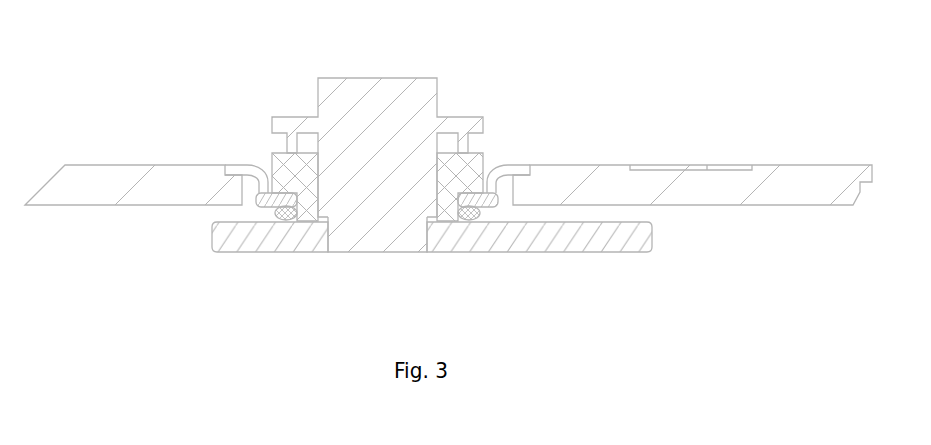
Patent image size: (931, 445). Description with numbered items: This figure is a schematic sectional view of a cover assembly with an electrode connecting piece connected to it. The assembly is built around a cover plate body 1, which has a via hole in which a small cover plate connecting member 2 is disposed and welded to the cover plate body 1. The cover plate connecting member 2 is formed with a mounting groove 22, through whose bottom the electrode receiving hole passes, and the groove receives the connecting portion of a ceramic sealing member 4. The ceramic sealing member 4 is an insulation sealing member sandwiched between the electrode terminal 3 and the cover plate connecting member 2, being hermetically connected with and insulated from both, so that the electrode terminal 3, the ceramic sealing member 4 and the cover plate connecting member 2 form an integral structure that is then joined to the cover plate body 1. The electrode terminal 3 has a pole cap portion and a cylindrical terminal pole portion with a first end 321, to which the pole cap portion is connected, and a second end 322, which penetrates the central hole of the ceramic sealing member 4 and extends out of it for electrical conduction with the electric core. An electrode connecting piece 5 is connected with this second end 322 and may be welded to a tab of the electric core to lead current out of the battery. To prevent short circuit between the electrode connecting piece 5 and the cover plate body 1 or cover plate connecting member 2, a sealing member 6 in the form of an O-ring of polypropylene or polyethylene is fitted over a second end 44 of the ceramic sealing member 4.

The cover plate body 1 is at (116, 170).
The cover plate connecting member 2 is at (497, 167).
The mounting groove 22 is at (258, 165).
The electrode terminal 3 is at (366, 159).
The first end 321 is at (325, 148).
The second end 322 is at (398, 240).
The ceramic sealing member 4 is at (455, 163).
The second end of the ceramic sealing member 44 is at (297, 213).
The electrode connecting piece 5 is at (308, 240).
The sealing member 6 is at (467, 217).